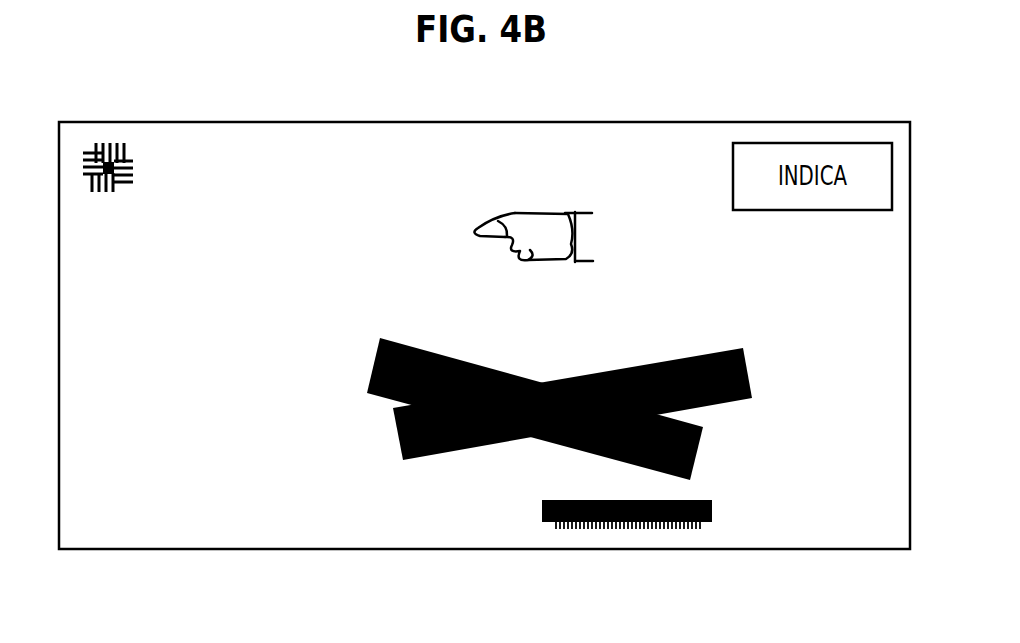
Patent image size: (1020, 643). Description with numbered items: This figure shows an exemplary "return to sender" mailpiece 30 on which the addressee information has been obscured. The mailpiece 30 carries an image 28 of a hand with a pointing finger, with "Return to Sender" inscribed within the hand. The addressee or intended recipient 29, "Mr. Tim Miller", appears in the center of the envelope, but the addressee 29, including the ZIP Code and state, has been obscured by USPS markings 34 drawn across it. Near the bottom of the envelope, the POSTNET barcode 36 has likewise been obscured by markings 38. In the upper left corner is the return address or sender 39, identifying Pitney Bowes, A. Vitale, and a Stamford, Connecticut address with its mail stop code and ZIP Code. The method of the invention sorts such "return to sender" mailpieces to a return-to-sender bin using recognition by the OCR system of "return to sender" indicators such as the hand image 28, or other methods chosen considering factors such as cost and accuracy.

The image of a hand 28 is at (541, 212).
The addressee 29 is at (481, 339).
The mailpiece 30 is at (418, 549).
The USPS markings 34 is at (720, 352).
The POSTNET barcode 36 is at (658, 527).
The markings 38 is at (712, 500).
The return address 39 is at (261, 288).